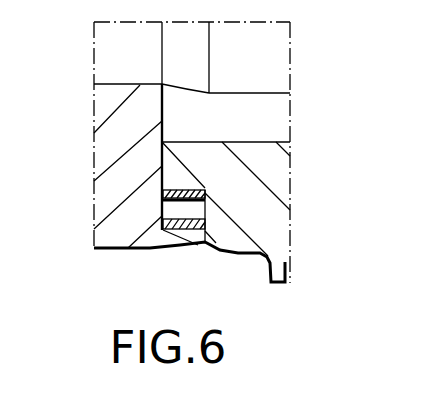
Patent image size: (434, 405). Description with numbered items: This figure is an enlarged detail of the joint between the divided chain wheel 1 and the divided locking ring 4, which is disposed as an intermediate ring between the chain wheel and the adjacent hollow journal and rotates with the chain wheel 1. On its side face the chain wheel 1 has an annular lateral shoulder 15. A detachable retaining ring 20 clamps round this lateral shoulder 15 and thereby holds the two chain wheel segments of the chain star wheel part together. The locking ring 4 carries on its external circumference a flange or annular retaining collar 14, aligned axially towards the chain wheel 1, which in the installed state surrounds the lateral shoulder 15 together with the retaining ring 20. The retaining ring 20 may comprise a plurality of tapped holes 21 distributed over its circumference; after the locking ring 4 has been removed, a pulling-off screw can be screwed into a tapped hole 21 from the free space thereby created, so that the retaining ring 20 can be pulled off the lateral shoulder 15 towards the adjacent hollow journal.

The chain wheel 1 is at (278, 110).
The divided locking ring 4 is at (117, 177).
The annular retaining collar 14 is at (181, 231).
The annular lateral shoulder 15 is at (197, 184).
The retaining ring 20 is at (153, 248).
The tapped holes 21 is at (197, 209).